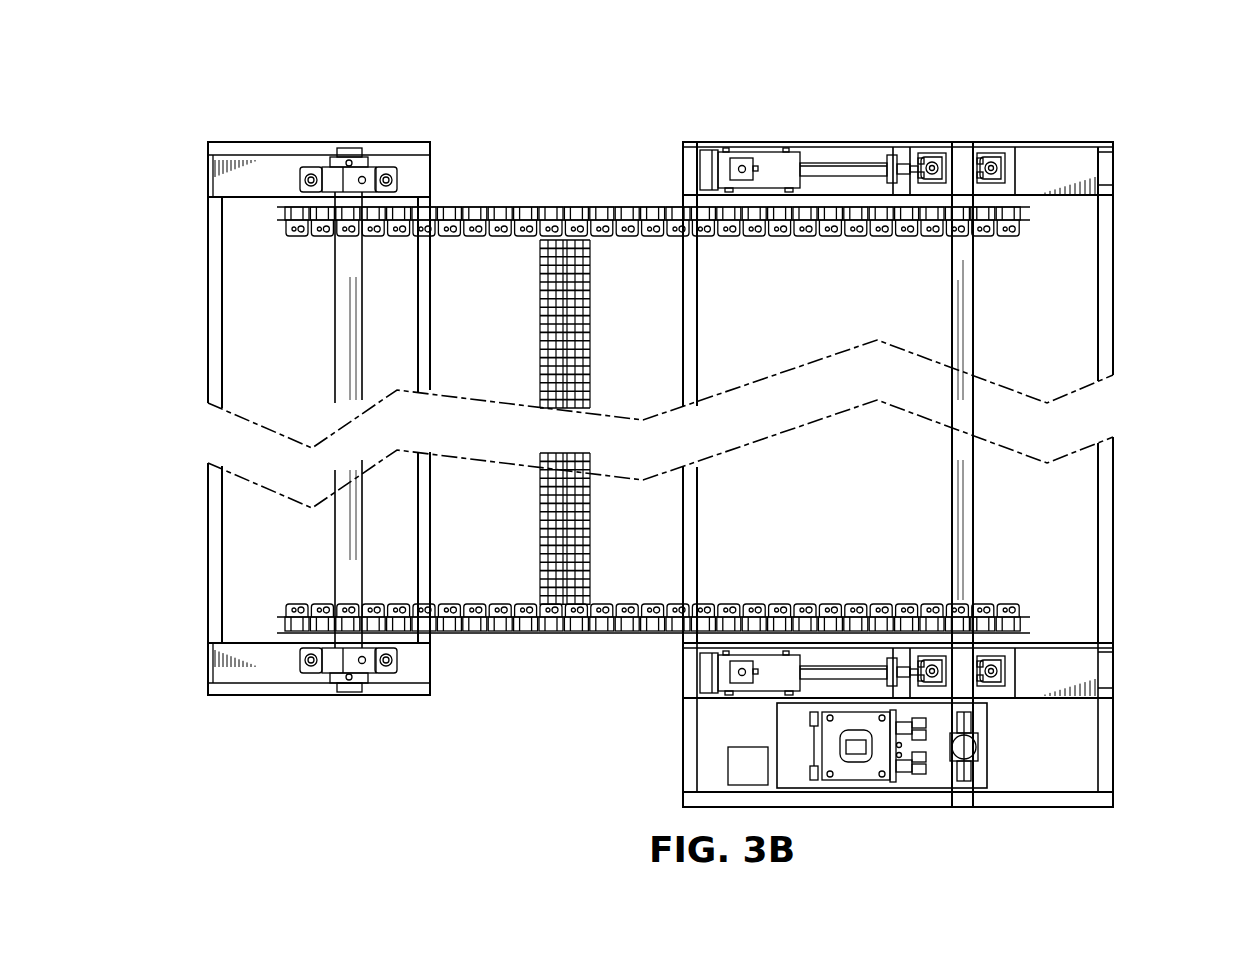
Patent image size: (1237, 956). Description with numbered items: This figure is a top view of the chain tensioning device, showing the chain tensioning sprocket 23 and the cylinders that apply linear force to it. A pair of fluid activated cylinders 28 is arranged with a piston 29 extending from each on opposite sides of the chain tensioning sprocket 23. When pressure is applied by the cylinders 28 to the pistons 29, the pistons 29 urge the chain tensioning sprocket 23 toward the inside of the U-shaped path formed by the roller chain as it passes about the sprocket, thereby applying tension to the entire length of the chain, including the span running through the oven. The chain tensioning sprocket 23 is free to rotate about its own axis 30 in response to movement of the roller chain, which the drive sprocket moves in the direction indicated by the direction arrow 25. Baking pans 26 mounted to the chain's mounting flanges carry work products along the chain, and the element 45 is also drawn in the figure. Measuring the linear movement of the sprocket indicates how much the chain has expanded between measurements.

The chain tensioning sprocket 23 is at (978, 227).
The direction arrow 25 is at (1034, 218).
The baking pans 26 is at (636, 203).
The fluid activated cylinders 28 is at (780, 149).
The piston 29 is at (881, 152).
The axis 30 is at (978, 332).
The cylinder mount 45 is at (741, 155).